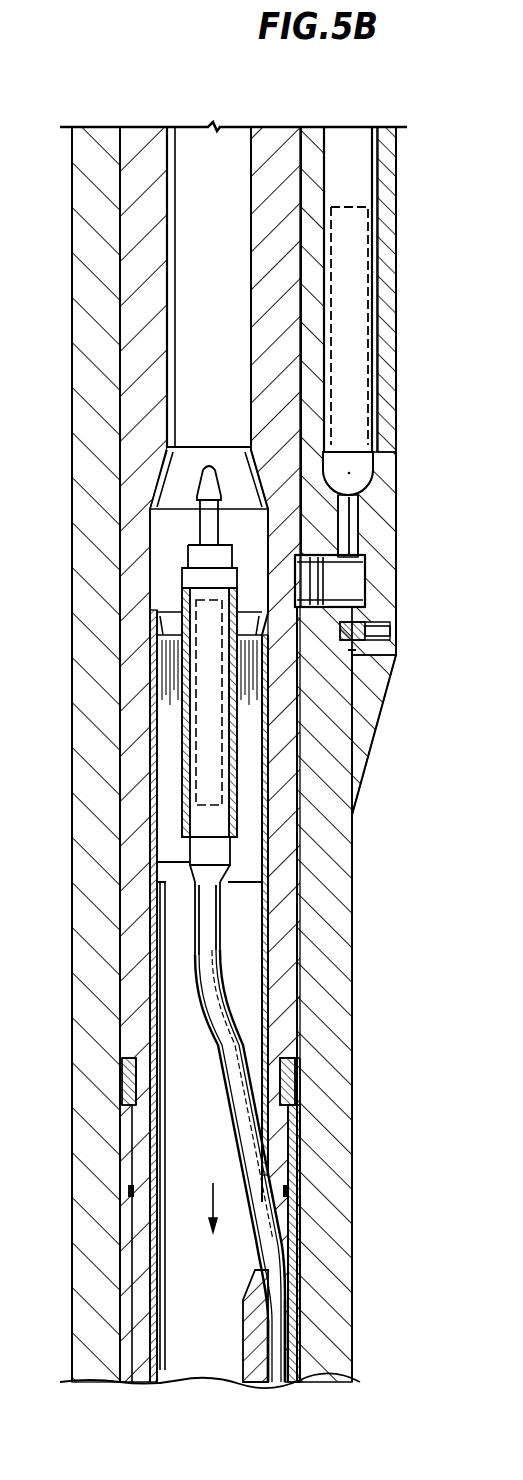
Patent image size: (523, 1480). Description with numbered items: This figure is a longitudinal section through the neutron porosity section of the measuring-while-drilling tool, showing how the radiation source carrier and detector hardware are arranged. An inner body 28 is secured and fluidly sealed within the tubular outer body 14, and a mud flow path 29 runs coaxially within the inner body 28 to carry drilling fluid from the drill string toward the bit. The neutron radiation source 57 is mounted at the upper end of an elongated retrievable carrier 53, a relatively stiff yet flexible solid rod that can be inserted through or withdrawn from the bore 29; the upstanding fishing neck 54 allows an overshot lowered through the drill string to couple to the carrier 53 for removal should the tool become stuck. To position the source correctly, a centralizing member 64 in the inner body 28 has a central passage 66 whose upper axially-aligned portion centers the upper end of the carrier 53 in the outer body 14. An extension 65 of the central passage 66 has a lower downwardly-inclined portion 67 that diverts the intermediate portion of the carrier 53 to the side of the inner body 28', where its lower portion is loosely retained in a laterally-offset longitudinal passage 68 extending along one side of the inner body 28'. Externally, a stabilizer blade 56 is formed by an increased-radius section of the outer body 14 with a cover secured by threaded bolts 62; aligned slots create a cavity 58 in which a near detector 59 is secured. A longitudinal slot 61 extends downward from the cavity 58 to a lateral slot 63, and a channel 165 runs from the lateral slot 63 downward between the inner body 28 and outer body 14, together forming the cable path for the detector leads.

The outer body 14 is at (330, 918).
The inner body 28 is at (348, 754).
The inner body 28' is at (328, 1220).
The mud flow path 29 is at (180, 1317).
The retrievable carrier 53 is at (228, 1073).
The fishing neck 54 is at (211, 533).
The stabilizer blade 56 is at (386, 240).
The neutron radiation source 57 is at (213, 753).
The cavity 58 is at (362, 155).
The near detector 59 is at (358, 328).
The longitudinal slot 61 is at (360, 540).
The threaded bolt 62 is at (390, 633).
The lateral slot 63 is at (360, 577).
The centralizing member 64 is at (256, 805).
The extension of the central passage 65 is at (186, 966).
The central passage 66 is at (180, 862).
The downwardly-inclined portion 67 is at (250, 1098).
The laterally-offset longitudinal passage 68 is at (288, 1363).
The channel 165 is at (296, 682).